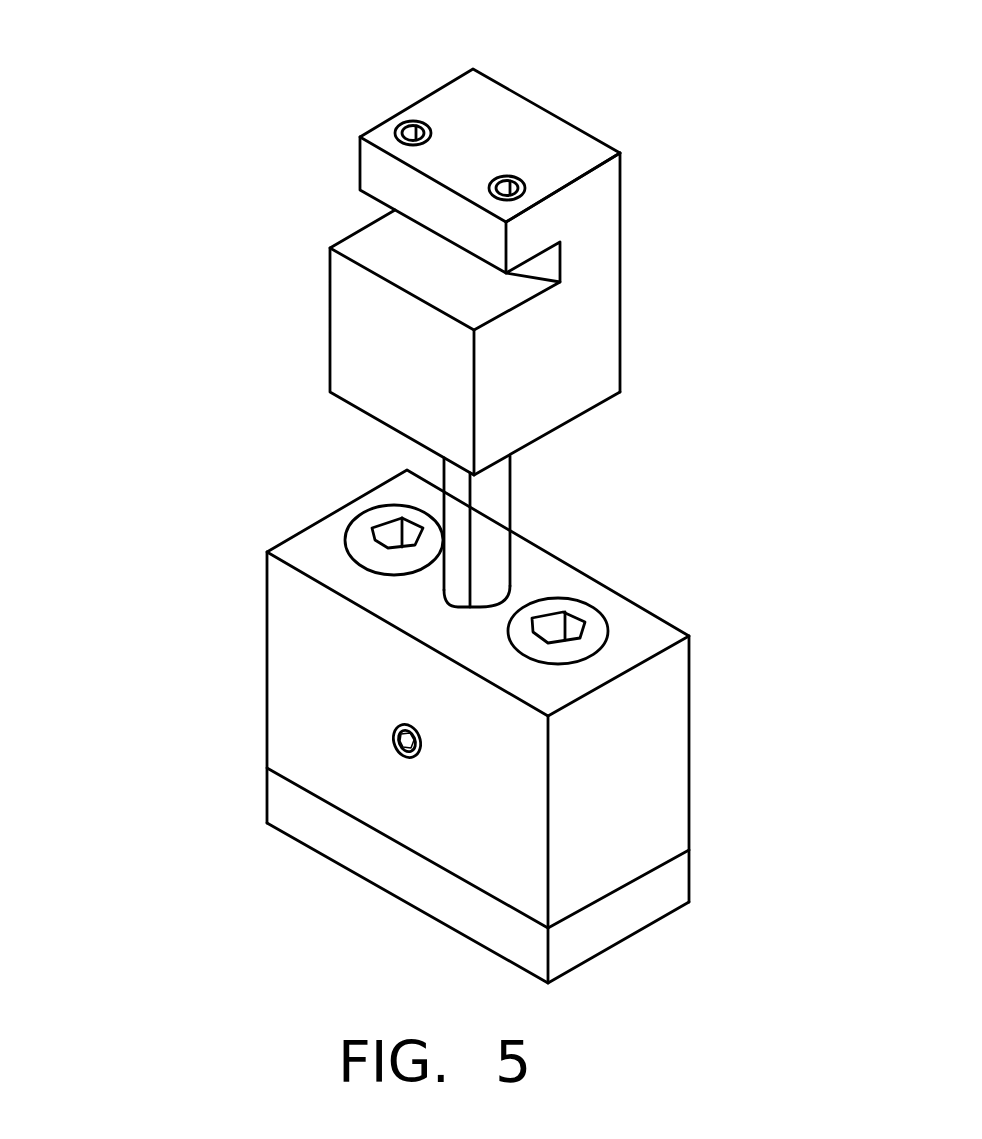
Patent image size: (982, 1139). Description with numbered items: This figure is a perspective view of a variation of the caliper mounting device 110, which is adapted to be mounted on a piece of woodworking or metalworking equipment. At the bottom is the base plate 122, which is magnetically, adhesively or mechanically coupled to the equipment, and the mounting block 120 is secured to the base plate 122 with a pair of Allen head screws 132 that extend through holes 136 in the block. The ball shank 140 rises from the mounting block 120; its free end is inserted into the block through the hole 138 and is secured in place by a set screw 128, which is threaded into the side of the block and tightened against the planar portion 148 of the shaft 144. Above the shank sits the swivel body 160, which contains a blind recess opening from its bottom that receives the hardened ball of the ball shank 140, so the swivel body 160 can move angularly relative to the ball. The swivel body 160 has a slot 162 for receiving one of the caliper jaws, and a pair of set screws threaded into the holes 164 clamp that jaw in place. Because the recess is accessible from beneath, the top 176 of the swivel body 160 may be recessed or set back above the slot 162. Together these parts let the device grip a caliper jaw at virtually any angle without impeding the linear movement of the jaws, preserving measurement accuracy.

The device 110 is at (425, 502).
The mounting block 120 is at (630, 775).
The base plate 122 is at (295, 810).
The set screw 128 is at (407, 741).
The Allen head screws 132 is at (396, 537).
The holes 136 is at (650, 626).
The hole 138 is at (457, 607).
The ball shank 140 is at (530, 593).
The shaft 144 is at (469, 519).
The planar portion 148 is at (618, 518).
The swivel body 160 is at (478, 248).
The slot 162 is at (552, 263).
The holes 164 is at (346, 110).
The top 176 is at (508, 123).